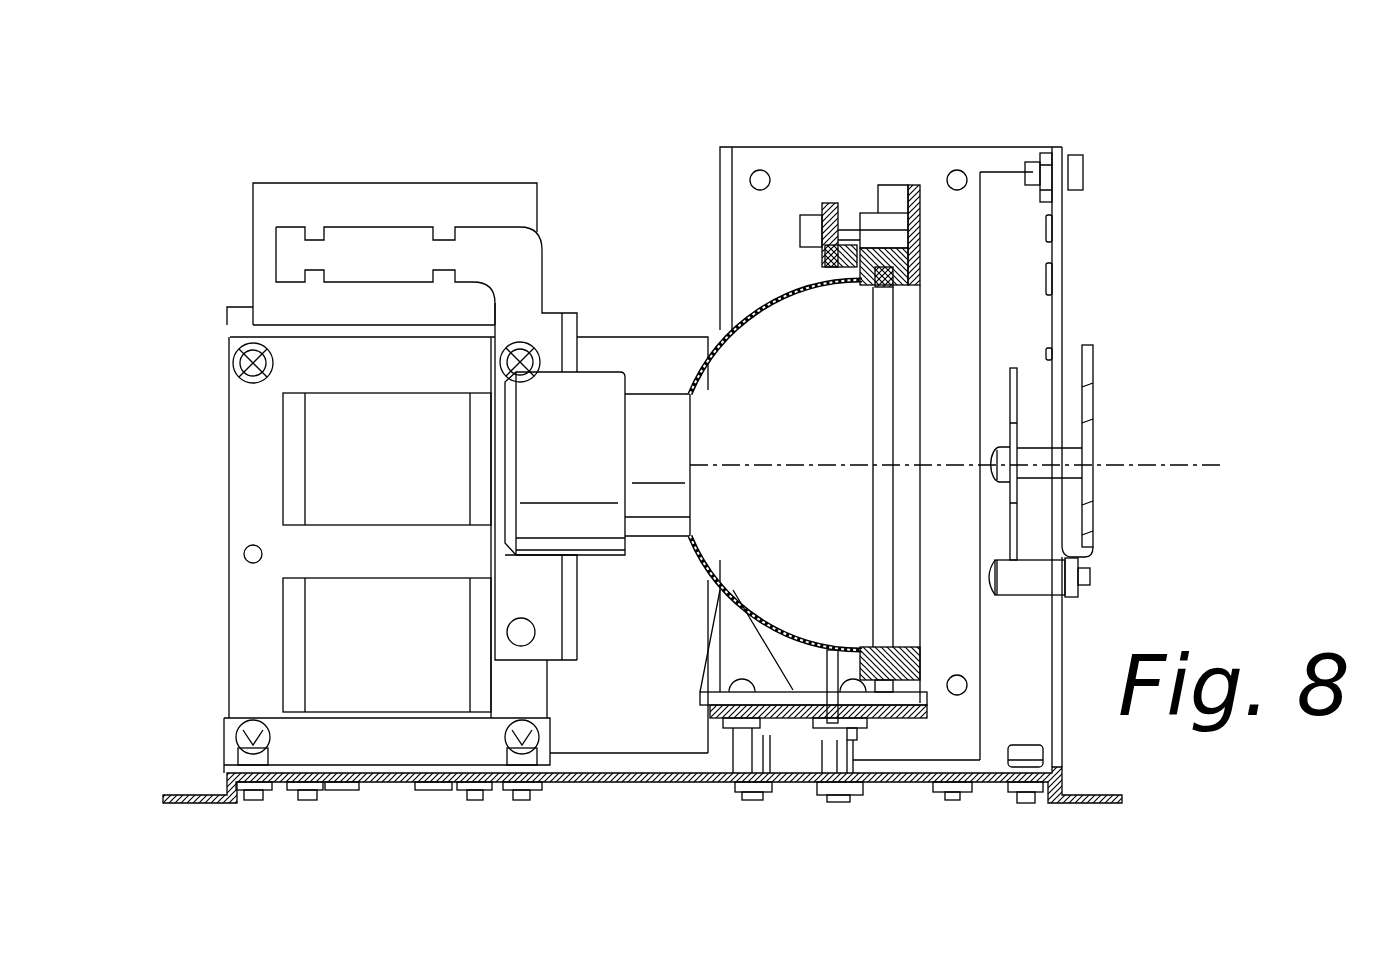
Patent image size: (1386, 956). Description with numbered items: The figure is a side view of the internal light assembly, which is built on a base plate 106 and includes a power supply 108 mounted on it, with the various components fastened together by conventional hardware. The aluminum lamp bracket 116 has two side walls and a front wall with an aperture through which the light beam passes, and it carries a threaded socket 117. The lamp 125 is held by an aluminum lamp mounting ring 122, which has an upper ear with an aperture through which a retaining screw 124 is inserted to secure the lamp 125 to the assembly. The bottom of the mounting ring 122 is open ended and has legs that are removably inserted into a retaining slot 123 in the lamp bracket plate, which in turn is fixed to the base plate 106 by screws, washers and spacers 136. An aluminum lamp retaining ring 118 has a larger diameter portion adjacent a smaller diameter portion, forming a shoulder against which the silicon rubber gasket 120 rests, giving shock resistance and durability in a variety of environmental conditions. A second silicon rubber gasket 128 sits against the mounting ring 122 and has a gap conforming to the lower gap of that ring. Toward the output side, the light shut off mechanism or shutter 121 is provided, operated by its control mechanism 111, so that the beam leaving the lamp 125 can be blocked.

The base plate 106 is at (625, 783).
The power supply 108 is at (315, 490).
The control mechanism 111 is at (1090, 578).
The lamp bracket 116 is at (914, 205).
The threaded socket 117 is at (888, 213).
The lamp retaining ring 118 is at (905, 290).
The gasket 120 is at (893, 292).
The light shut off mechanism or shutter 121 is at (1057, 365).
The lamp mounting ring 122 is at (828, 203).
The retaining slot 123 is at (833, 703).
The retaining screw 124 is at (810, 218).
The lamp 125 is at (593, 397).
The second silicon rubber gasket 128 is at (857, 277).
The spacer 136 is at (762, 748).